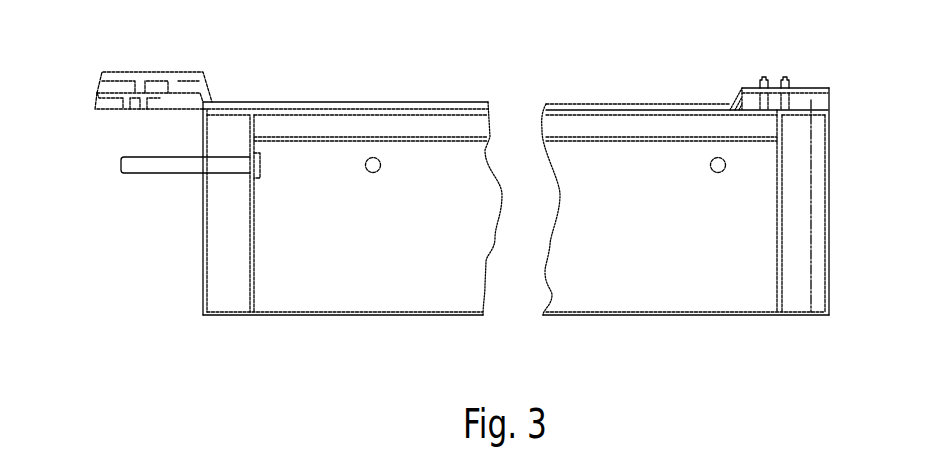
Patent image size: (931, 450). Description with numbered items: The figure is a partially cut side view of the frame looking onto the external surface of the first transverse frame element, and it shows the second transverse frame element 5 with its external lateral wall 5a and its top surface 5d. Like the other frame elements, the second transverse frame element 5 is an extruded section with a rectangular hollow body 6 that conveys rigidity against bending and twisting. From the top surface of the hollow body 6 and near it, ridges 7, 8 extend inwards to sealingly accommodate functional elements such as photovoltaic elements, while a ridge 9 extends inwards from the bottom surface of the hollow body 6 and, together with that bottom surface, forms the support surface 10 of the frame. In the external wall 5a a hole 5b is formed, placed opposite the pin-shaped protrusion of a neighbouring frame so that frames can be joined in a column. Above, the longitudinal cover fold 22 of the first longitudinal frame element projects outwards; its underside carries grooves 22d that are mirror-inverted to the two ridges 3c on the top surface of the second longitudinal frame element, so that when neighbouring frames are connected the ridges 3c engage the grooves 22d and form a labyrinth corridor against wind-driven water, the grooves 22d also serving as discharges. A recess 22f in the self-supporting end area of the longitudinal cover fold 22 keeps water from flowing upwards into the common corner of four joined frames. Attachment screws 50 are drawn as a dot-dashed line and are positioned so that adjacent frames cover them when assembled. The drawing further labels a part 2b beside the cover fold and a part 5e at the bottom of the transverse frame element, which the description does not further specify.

The plate / bottom part 2b is at (137, 167).
The ridges 3c is at (784, 77).
The second transverse frame element 5 is at (200, 190).
The external lateral wall 5a is at (370, 267).
The hole 5b is at (383, 170).
The top surface 5d is at (570, 93).
The rail bottom 5e is at (747, 314).
The hollow body 6 is at (200, 230).
The ridge 7 is at (752, 110).
The ridge 8 is at (738, 138).
The ridge 9 is at (763, 310).
The support surface 10 is at (417, 330).
The longitudinal cover fold 22 is at (185, 101).
The grooves 22d is at (148, 103).
The recess 22f is at (101, 101).
The attachment screws 50 is at (810, 210).